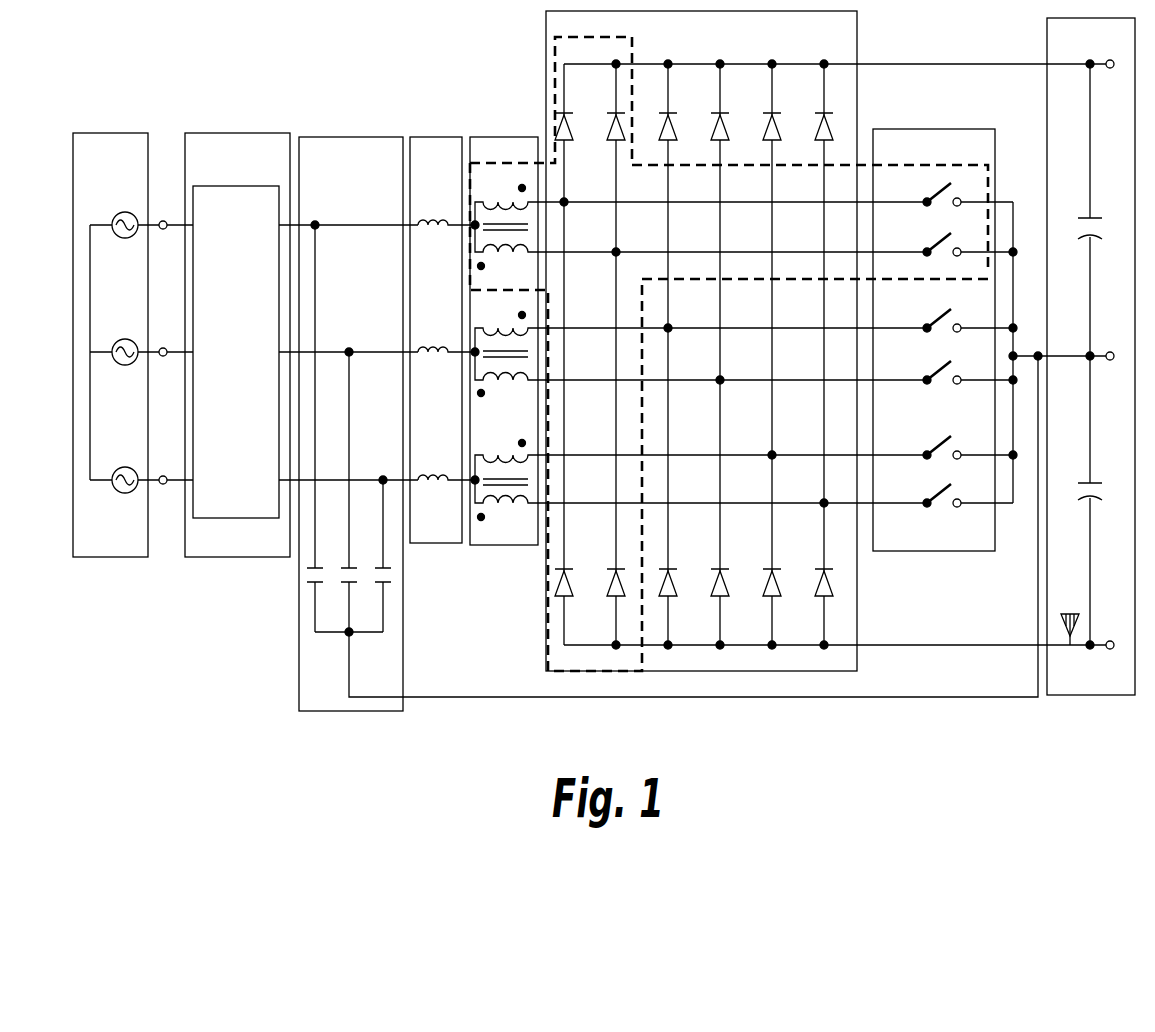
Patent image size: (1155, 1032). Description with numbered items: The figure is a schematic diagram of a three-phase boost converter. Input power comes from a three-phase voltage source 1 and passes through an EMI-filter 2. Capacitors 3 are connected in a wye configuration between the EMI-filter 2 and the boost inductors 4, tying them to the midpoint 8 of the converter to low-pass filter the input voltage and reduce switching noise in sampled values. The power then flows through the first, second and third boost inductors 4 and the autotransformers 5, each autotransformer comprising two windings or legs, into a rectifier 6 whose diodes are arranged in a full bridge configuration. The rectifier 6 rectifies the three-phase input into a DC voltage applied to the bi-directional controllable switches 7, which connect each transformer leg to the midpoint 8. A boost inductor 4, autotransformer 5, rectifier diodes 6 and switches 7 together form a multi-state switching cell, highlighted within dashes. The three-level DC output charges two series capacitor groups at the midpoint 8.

The three-phase voltage source 1 is at (121, 345).
The EMI-filter 2 is at (228, 345).
The capacitors 3 is at (668, 424).
The boost inductors 4 is at (442, 340).
The autotransformers 5 is at (640, 341).
The rectifier 6 is at (828, 341).
The bi-directional switches 7 is at (790, 340).
The midpoint 8 is at (1032, 356).